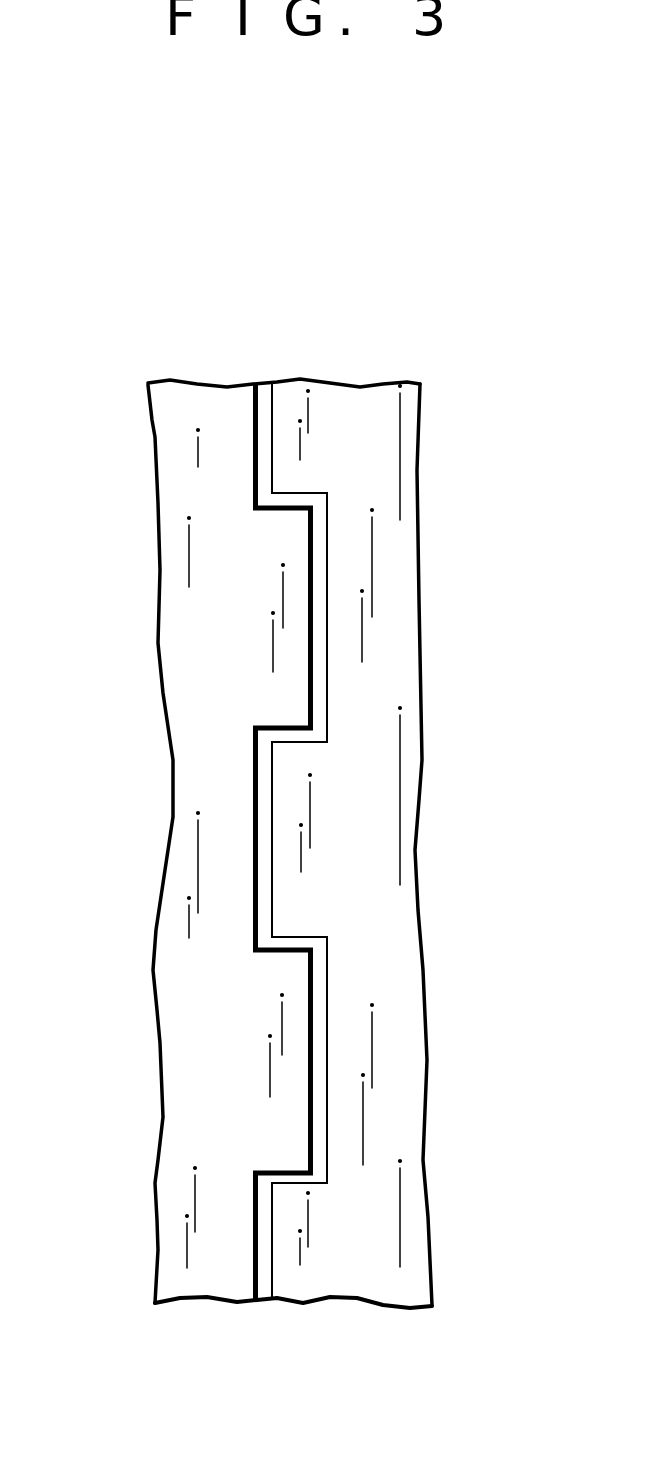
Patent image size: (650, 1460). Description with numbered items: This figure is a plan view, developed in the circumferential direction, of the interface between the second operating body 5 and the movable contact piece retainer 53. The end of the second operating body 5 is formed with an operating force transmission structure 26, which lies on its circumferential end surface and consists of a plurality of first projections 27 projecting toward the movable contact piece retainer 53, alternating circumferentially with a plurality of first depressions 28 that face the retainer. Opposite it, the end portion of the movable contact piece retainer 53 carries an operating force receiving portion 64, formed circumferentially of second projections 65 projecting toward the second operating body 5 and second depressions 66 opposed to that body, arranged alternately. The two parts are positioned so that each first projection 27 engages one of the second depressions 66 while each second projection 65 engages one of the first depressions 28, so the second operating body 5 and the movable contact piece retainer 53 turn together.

The second operating body 5 is at (190, 380).
The operating force transmission structure 26 is at (240, 233).
The first projections 27 is at (278, 553).
The first depressions 28 is at (263, 415).
The movable contact piece retainer 53 is at (420, 384).
The operating force receiving portion 64 is at (332, 323).
The second projections 65 is at (312, 433).
The second depressions 66 is at (325, 570).